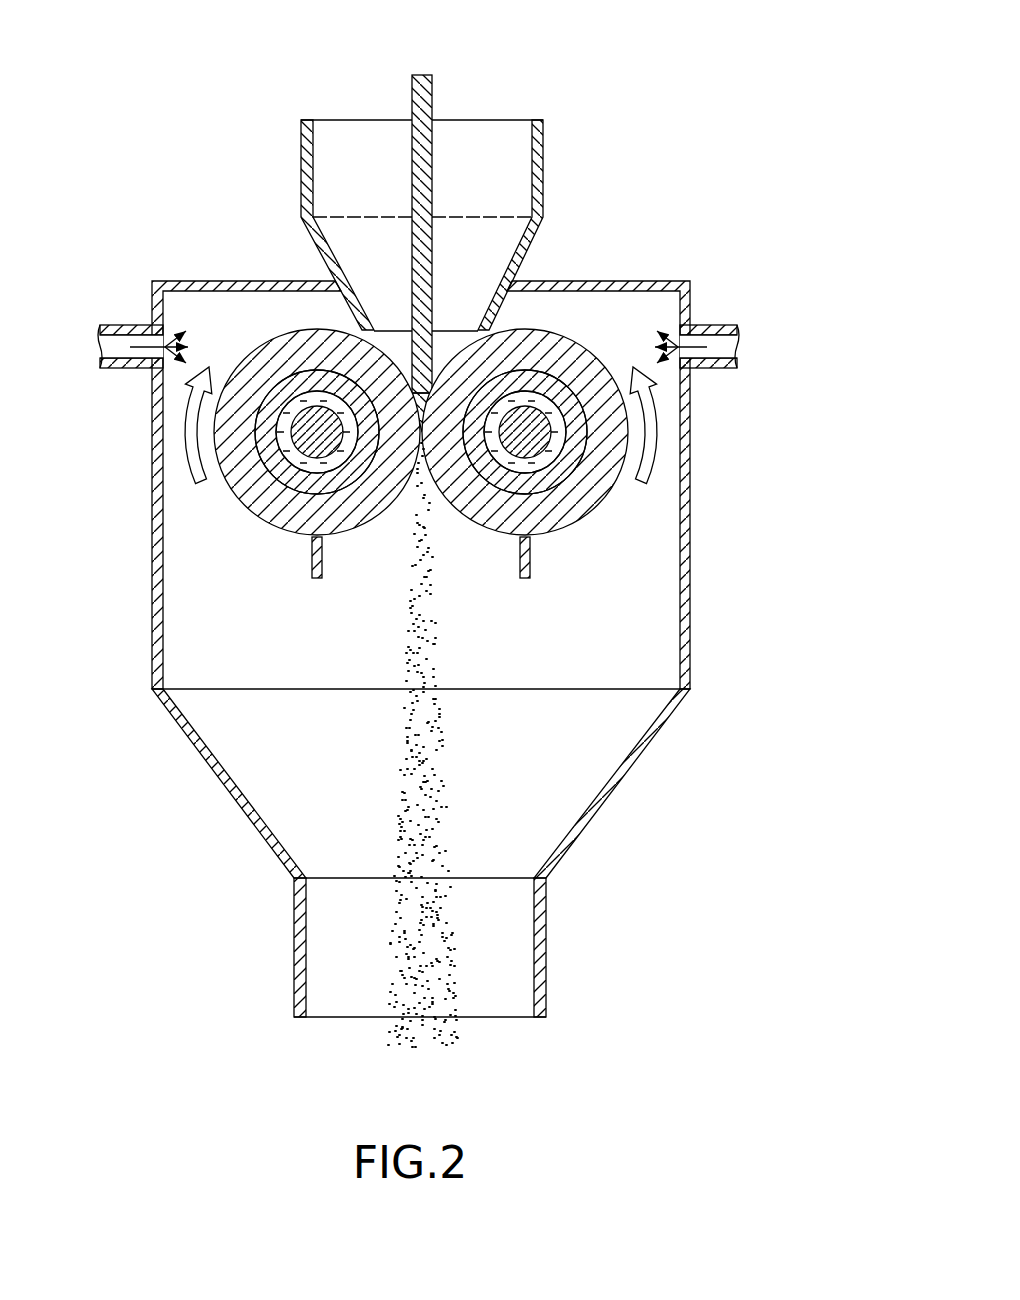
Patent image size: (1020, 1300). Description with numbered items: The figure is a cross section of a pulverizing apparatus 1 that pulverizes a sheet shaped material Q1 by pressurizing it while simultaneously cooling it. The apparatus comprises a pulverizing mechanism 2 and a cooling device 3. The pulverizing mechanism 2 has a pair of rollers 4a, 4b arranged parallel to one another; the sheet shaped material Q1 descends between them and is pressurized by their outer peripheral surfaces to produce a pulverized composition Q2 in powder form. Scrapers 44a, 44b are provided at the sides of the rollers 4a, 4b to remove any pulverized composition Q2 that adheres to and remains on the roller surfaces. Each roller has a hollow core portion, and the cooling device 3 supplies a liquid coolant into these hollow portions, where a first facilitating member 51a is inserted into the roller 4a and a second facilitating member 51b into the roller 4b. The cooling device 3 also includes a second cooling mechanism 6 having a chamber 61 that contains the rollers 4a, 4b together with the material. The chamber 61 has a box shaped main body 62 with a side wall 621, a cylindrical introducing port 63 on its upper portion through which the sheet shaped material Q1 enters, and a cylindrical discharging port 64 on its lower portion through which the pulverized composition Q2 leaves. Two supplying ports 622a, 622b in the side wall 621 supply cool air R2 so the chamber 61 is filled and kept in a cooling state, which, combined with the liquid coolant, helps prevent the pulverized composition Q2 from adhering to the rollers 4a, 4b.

The pulverizing apparatus 1 is at (668, 124).
The pulverizing mechanism 2 is at (615, 313).
The cooling device 3 is at (724, 268).
The roller 4a is at (593, 427).
The roller 4b is at (249, 429).
The scraper 44a is at (534, 572).
The scraper 44b is at (306, 572).
The first facilitating member 51a is at (522, 425).
The second facilitating member 51b is at (308, 425).
The second cooling mechanism 6 is at (424, 615).
The chamber 61 is at (603, 278).
The main body 62 is at (458, 754).
The side wall 621 is at (421, 783).
The supplying port 622a is at (695, 375).
The supplying port 622b is at (155, 372).
The introducing port 63 is at (545, 150).
The discharging port 64 is at (548, 955).
The sheet shaped material Q1 is at (423, 63).
The pulverized composition Q2 is at (440, 626).
The cool air R2 is at (135, 340).